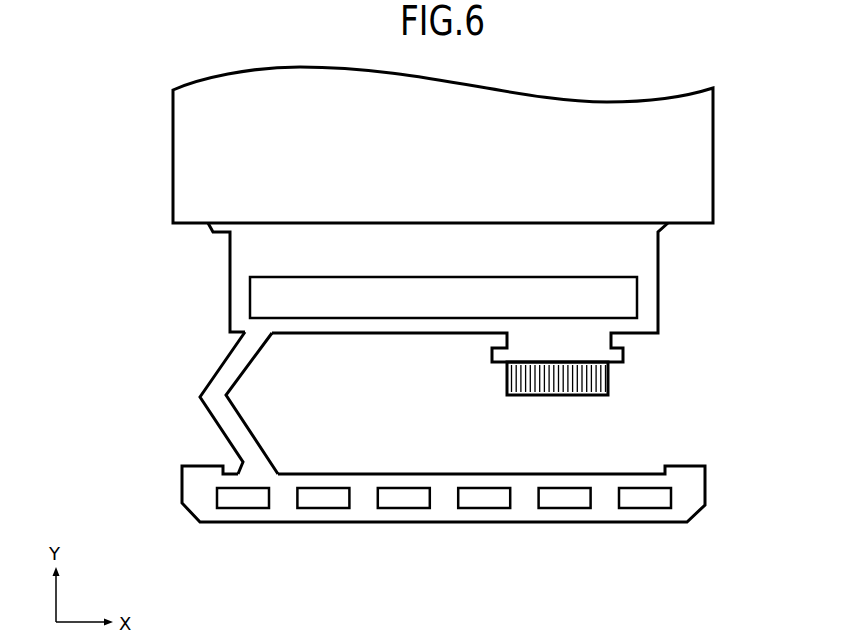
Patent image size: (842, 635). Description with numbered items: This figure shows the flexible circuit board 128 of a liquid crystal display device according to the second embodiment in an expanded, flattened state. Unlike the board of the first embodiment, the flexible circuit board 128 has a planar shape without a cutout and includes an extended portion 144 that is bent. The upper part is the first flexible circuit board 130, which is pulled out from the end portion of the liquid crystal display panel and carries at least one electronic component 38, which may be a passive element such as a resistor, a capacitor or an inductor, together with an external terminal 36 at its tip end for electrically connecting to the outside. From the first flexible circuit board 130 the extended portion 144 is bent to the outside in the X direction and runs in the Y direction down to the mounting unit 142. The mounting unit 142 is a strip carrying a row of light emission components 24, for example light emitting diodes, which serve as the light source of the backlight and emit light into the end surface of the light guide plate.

The flexible circuit board 128 is at (105, 287).
The first flexible circuit board 130 is at (238, 302).
The extended portion 144 is at (217, 412).
The mounting unit 142 is at (193, 493).
The light emission component 24 is at (242, 500).
The electronic component 38 is at (637, 298).
The external terminal 36 is at (608, 378).